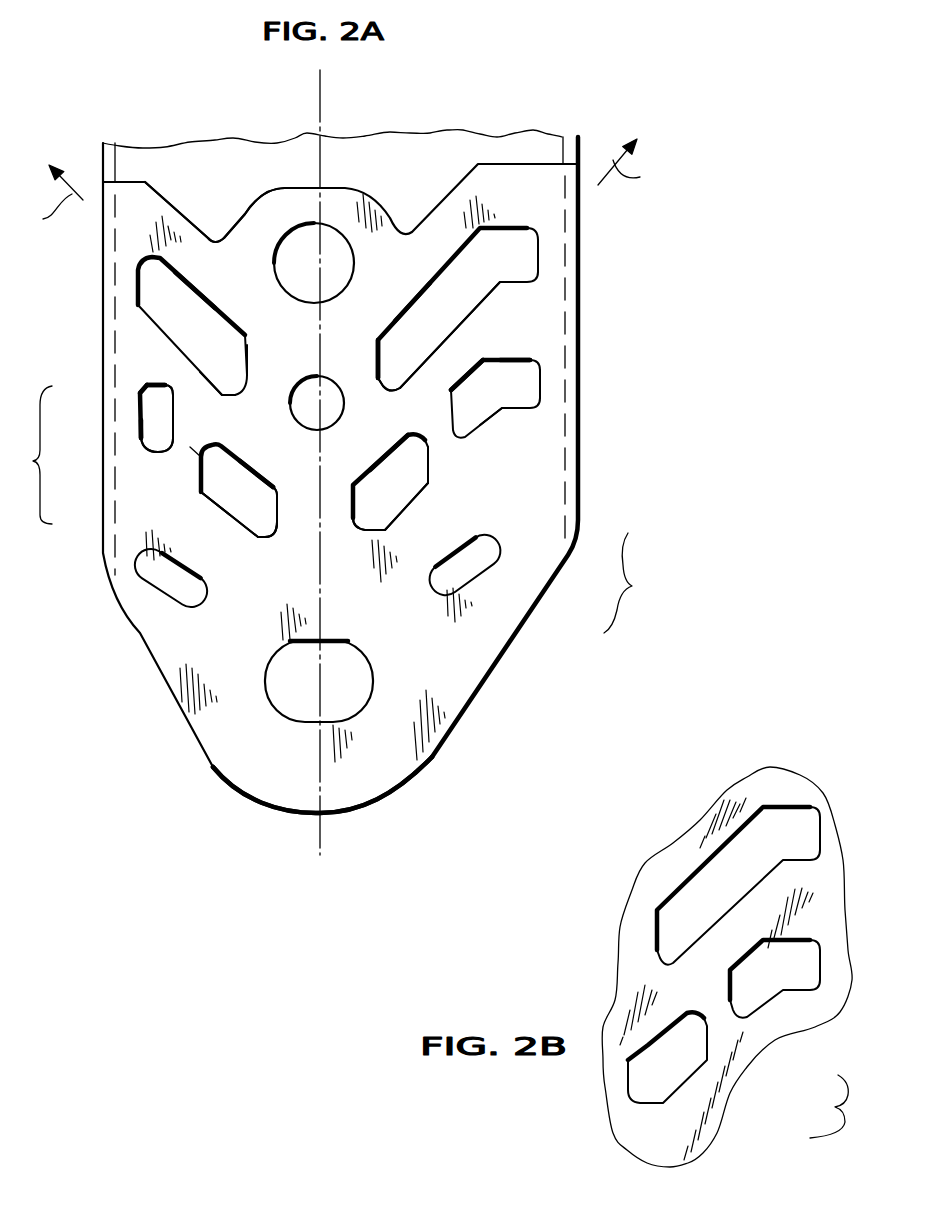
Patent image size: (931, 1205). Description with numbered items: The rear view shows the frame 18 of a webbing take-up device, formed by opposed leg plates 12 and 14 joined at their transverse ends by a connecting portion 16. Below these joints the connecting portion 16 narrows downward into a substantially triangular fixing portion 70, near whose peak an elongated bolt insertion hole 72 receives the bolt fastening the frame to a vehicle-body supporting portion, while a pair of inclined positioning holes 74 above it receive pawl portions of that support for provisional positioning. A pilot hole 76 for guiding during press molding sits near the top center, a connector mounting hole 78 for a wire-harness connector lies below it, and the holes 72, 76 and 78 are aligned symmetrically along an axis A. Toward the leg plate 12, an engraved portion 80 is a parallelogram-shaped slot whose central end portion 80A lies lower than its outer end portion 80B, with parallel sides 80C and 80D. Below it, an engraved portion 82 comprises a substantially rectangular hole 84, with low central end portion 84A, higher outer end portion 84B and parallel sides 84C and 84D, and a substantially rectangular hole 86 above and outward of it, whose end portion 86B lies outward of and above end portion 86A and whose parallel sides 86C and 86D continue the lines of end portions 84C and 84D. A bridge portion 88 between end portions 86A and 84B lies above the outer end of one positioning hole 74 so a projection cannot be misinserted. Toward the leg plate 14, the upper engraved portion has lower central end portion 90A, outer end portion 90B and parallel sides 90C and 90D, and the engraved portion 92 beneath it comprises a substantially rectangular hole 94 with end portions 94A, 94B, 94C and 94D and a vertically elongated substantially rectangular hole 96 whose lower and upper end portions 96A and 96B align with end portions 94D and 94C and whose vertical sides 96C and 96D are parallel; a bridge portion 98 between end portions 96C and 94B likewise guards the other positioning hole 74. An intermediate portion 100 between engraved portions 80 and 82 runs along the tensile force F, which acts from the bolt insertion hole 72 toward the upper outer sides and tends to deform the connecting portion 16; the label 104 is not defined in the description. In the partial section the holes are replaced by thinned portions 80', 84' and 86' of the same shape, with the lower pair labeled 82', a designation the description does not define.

In FIG. 2A, the leg plate 12 is at (568, 419).
In FIG. 2A, the leg plate 14 is at (113, 336).
In FIG. 2A, the connecting portion 16 is at (490, 182).
In FIG. 2A, the frame 18 is at (571, 134).
In FIG. 2A, the fixing portion 70 is at (378, 770).
In FIG. 2A, the bolt insertion hole 72 is at (305, 718).
In FIG. 2A, the positioning holes 74 is at (148, 576).
In FIG. 2A, the pilot hole 76 is at (325, 225).
In FIG. 2A, the connector mounting hole 78 is at (320, 376).
In FIG. 2A, the engraved portion 80 is at (514, 309).
In FIG. 2A, the end portion 80A is at (377, 348).
In FIG. 2A, the end portion 80B is at (536, 258).
In FIG. 2A, the end portion 80C is at (411, 292).
In FIG. 2A, the end portion 80D is at (410, 385).
In FIG. 2A, the engraved portion 82 is at (632, 583).
In FIG. 2A, the substantially rectangular hole 84 is at (468, 530).
In FIG. 2A, the end portion 84A is at (365, 533).
In FIG. 2A, the end portion 84B is at (428, 478).
In FIG. 2A, the end portion 84C is at (379, 466).
In FIG. 2A, the end portion 84D is at (407, 503).
In FIG. 2A, the substantially rectangular hole 86 is at (536, 460).
In FIG. 2A, the end portion 86A is at (453, 386).
In FIG. 2A, the end portion 86B is at (541, 384).
In FIG. 2A, the end portion 86C is at (527, 358).
In FIG. 2A, the end portion 86D is at (493, 420).
In FIG. 2A, the bridge portion 88 is at (426, 460).
In FIG. 2A, the end portion 90A is at (247, 378).
In FIG. 2A, the end portion 90B is at (140, 275).
In FIG. 2A, the end portion 90C is at (211, 306).
In FIG. 2A, the end portion 90D is at (215, 393).
In FIG. 2A, the engraved portion 92 is at (138, 461).
In FIG. 2A, the substantially rectangular hole 94 is at (218, 462).
In FIG. 2A, the end portion 94A is at (273, 512).
In FIG. 2A, the end portion 94B is at (226, 517).
In FIG. 2A, the end portion 94C is at (258, 483).
In FIG. 2A, the end portion 94D is at (262, 538).
In FIG. 2A, the substantially rectangular hole 96 is at (160, 418).
In FIG. 2A, the lower end portion 96A is at (143, 427).
In FIG. 2A, the upper end portion 96B is at (157, 383).
In FIG. 2A, the end portion 96C is at (175, 428).
In FIG. 2A, the end portion 96D is at (140, 390).
In FIG. 2A, the bridge portion 98 is at (190, 458).
In FIG. 2A, the intermediate portion 100 is at (432, 372).
In FIG. 2A, the upper notch of plate 104 is at (185, 373).
In FIG. 2A, the axis A is at (318, 836).
In FIG. 2A, the tensile force F is at (336, 188).
In FIG. 2B, the thinned portion 80' is at (738, 886).
In FIG. 2B, the alternative slot group 82' is at (741, 967).
In FIG. 2B, the thinned portion 84' is at (712, 1074).
In FIG. 2B, the thinned portion 86' is at (781, 1014).